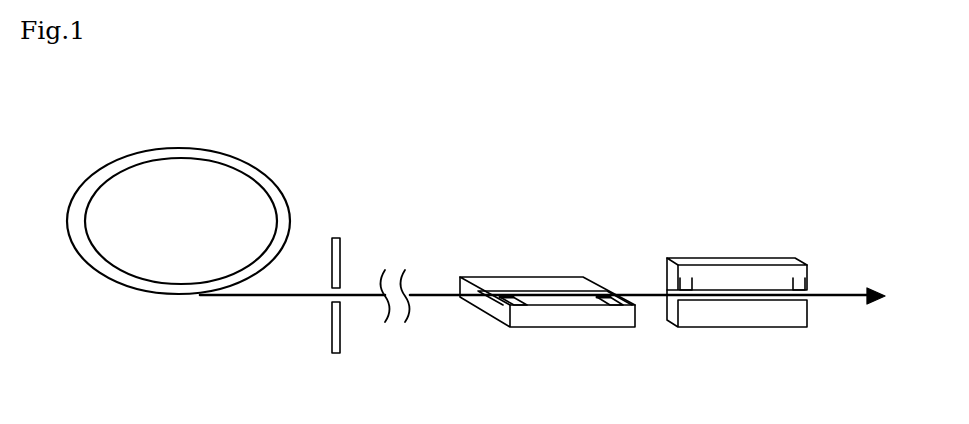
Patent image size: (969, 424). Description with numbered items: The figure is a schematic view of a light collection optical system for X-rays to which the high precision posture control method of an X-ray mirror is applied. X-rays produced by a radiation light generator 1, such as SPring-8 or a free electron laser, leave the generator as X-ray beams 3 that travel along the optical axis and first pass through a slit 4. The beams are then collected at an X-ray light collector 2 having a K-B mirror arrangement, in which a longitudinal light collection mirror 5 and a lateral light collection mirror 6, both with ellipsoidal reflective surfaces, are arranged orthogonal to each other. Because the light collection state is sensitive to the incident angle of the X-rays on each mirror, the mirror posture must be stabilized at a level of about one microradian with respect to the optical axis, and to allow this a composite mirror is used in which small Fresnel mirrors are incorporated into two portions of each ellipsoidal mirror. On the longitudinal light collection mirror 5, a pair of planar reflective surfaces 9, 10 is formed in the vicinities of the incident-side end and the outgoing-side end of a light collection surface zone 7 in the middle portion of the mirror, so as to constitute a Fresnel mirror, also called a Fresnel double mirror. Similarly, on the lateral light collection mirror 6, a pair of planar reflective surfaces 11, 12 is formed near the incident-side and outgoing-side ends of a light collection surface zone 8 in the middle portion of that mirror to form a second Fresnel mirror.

The radiation light generator 1 is at (259, 161).
The X-ray light collector 2 is at (659, 204).
The X-ray beams 3 is at (285, 295).
The slit 4 is at (342, 247).
The longitudinal light collection mirror 5 is at (527, 263).
The lateral light collection mirror 6 is at (752, 243).
The light collection surface zone 7 is at (562, 292).
The light collection surface zone 8 is at (740, 300).
The planar reflective surface 9 is at (510, 305).
The planar reflective surface 10 is at (608, 296).
The planar reflective surface 11 is at (690, 280).
The planar reflective surface 12 is at (800, 280).